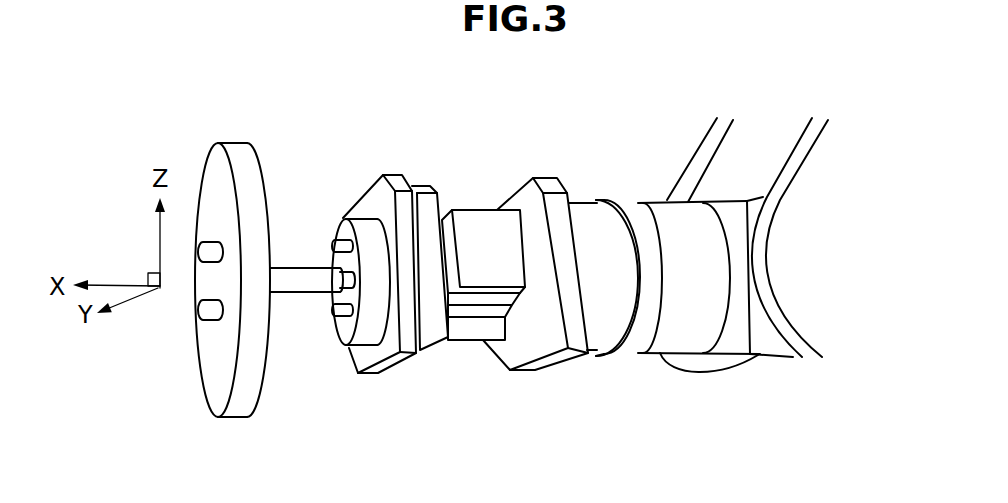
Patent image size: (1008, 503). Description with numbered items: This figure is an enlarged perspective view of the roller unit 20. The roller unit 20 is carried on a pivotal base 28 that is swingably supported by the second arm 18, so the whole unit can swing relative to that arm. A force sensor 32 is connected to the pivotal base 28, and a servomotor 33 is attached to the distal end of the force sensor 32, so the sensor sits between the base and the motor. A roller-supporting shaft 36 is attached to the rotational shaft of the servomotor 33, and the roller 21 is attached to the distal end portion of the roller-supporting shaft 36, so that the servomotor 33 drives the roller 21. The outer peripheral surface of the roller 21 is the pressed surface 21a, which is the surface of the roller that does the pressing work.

The second arm 18 is at (703, 150).
The roller unit 20 is at (387, 96).
The roller 21 is at (200, 236).
The pressed surface 21a is at (236, 152).
The pivotal base 28 is at (683, 340).
The force sensor 32 is at (585, 215).
The servomotor 33 is at (475, 217).
The roller-supporting shaft 36 is at (295, 297).